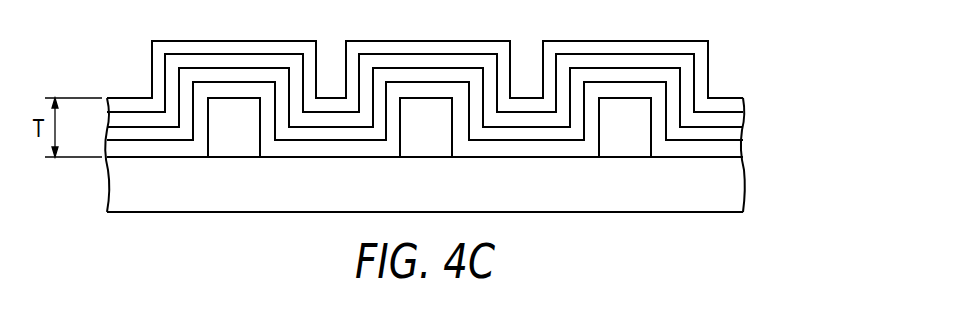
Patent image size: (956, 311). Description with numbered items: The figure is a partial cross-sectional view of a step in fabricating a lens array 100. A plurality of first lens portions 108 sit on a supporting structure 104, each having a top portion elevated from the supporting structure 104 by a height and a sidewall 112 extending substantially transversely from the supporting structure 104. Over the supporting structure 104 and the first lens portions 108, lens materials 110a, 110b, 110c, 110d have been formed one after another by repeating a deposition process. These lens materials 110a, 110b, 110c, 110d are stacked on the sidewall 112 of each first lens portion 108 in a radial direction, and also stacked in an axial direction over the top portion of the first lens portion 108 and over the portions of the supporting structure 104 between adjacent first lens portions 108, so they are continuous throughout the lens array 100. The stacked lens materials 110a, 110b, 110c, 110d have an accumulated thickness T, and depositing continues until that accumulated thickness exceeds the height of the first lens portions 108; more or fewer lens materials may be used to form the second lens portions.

The lens array 100 is at (425, 145).
The supporting structure 104 is at (740, 195).
The first lens portion 108 is at (233, 136).
The lens material 110a is at (743, 148).
The lens material 110b is at (743, 133).
The lens material 110c is at (743, 120).
The lens material 110d is at (743, 103).
The sidewall 112 is at (398, 137).